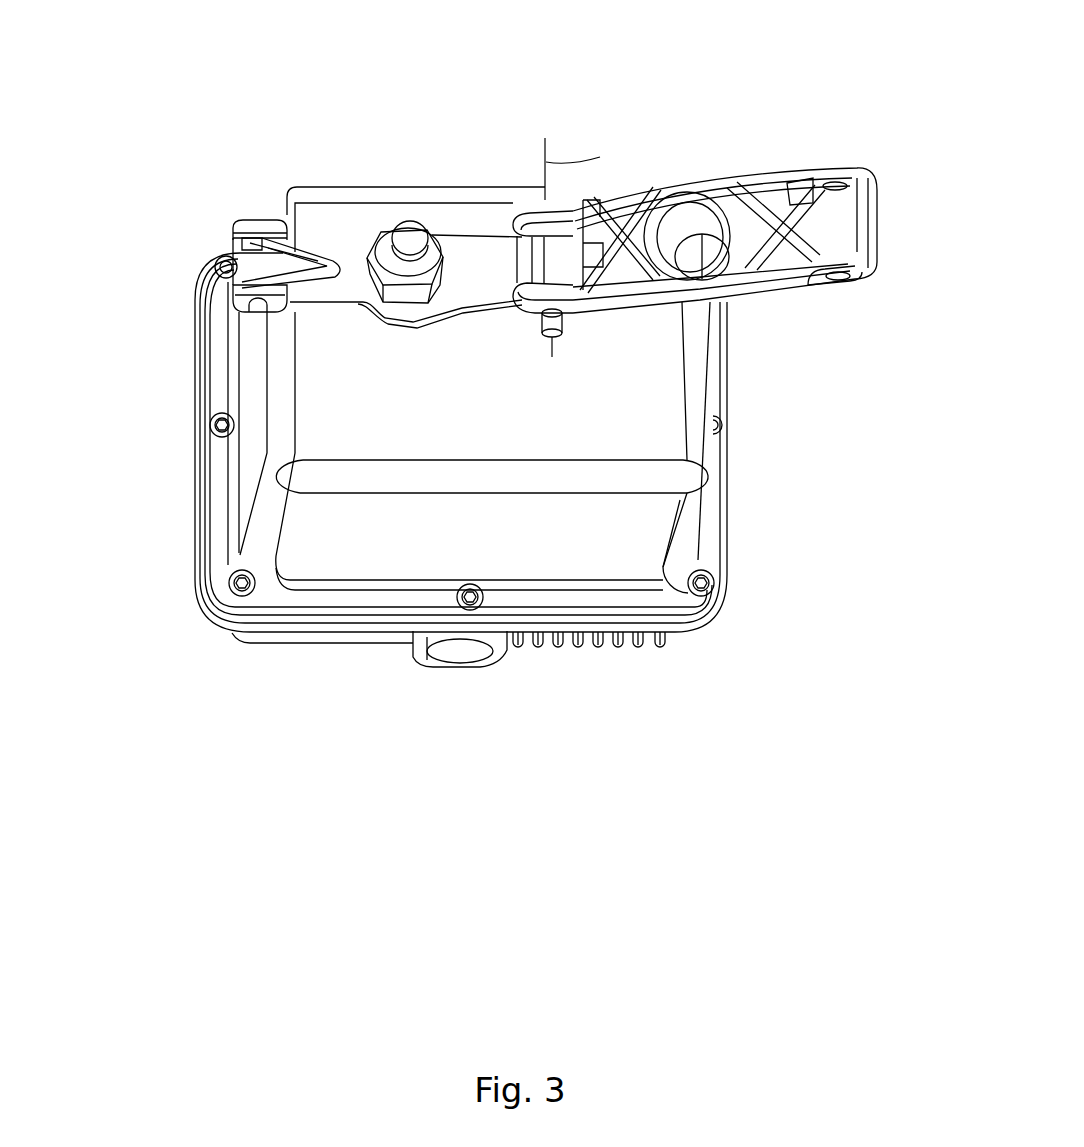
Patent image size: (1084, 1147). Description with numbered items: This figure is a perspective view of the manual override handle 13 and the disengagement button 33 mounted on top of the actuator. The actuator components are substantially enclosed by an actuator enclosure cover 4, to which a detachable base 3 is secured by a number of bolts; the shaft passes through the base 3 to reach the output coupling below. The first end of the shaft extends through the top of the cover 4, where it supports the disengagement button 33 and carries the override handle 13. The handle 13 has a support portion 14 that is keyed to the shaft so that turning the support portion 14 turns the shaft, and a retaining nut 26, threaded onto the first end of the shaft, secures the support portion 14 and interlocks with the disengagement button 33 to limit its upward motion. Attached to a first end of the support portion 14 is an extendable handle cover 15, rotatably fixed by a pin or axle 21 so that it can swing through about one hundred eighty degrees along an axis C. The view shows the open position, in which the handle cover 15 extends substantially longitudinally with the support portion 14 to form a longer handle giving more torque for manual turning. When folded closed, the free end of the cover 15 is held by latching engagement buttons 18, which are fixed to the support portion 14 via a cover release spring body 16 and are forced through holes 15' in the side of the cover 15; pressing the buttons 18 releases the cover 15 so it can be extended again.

The detachable base 3 is at (292, 607).
The actuator enclosure cover 4 is at (134, 428).
The manual override handle 13 is at (565, 103).
The support portion 14 is at (450, 250).
The extendable handle cover 15 is at (731, 225).
The holes 15' is at (893, 203).
The cover release spring body 16 is at (240, 237).
The latching engagement buttons 18 is at (247, 215).
The pin or axle 21 is at (560, 325).
The retaining nut 26 is at (370, 270).
The disengagement button 33 is at (407, 233).